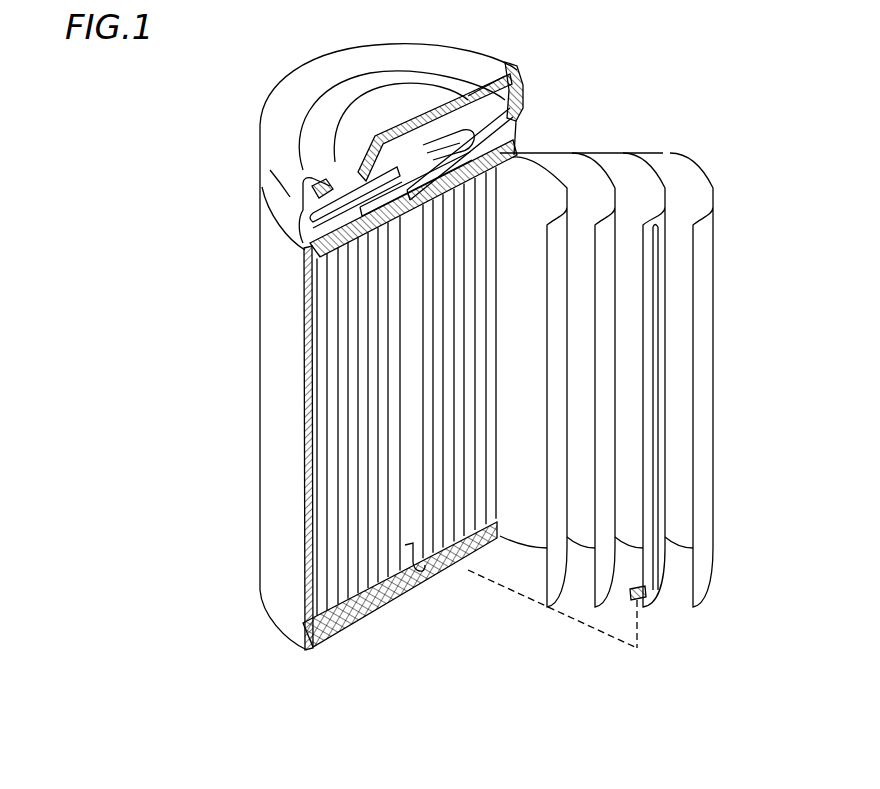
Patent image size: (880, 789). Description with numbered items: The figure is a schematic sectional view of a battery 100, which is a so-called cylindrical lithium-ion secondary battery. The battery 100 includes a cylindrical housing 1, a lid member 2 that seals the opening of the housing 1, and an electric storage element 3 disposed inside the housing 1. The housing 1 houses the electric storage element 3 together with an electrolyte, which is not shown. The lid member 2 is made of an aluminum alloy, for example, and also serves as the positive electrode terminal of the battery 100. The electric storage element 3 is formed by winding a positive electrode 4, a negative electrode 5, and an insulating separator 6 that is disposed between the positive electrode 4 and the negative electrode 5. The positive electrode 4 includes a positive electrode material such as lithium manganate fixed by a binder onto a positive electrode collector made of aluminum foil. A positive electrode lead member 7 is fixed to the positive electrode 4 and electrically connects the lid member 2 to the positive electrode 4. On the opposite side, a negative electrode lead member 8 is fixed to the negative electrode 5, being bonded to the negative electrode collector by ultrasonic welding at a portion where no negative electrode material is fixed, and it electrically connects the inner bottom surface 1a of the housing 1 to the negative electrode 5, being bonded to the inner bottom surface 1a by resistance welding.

The battery 100 is at (709, 92).
The housing 1 is at (275, 392).
The inner bottom surface 1a is at (392, 590).
The lid member 2 is at (338, 100).
The electric storage element 3 is at (752, 312).
The positive electrode 4 is at (557, 330).
The negative electrode 5 is at (663, 393).
The insulating separator 6 is at (702, 242).
The positive electrode lead member 7 is at (403, 157).
The negative electrode lead member 8 is at (653, 503).